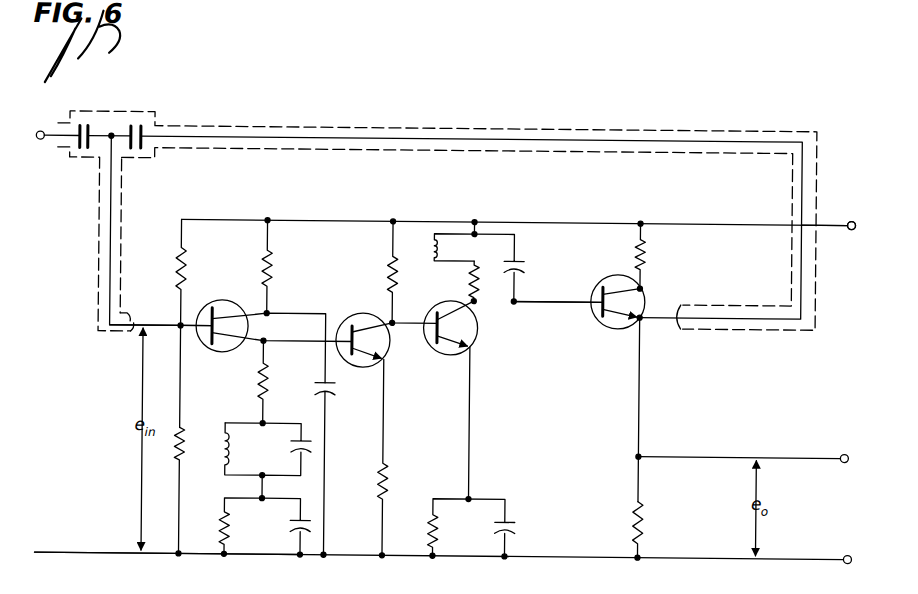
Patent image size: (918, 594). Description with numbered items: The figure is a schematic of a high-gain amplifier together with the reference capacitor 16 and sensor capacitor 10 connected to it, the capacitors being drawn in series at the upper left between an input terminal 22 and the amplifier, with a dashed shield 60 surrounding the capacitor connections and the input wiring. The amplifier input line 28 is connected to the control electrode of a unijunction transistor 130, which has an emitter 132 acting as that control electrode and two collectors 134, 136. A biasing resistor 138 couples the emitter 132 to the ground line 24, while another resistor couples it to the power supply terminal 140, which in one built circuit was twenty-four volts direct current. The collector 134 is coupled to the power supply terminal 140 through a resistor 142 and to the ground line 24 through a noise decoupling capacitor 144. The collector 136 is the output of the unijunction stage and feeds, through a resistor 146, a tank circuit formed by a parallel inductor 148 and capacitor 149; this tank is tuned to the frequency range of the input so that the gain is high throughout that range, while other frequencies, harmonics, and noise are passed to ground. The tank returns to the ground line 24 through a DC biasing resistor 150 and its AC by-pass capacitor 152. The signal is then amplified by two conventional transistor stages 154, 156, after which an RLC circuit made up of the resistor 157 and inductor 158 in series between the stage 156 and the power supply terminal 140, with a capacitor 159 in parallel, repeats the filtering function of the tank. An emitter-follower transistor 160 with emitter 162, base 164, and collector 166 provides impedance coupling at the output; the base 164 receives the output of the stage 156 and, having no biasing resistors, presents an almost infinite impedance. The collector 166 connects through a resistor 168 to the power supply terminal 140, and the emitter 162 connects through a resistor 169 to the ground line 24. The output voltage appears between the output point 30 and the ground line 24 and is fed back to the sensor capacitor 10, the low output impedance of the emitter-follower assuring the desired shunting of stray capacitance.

The sensor capacitor 10 is at (148, 131).
The reference capacitor 16 is at (100, 113).
The input terminal 22 is at (36, 143).
The ground line 24 is at (18, 582).
The operational amplifier input line 28 is at (152, 325).
The output point 30 is at (843, 460).
The shield 60 is at (133, 111).
The unijunction transistor 130 is at (184, 268).
The emitter 132 is at (206, 306).
The collector 134 is at (244, 317).
The collector 136 is at (240, 339).
The biasing resistor 138 is at (184, 430).
The power supply terminal 140 is at (832, 243).
The resistor 142 is at (272, 275).
The noise decoupling capacitor 144 is at (333, 393).
The resistor 146 is at (268, 386).
The inductor 148 is at (222, 462).
The capacitor 149 is at (293, 452).
The DC biasing resistor 150 is at (229, 529).
The AC by-pass capacitor 152 is at (294, 533).
The transistor stage 154 is at (368, 315).
The transistor stage 156 is at (434, 348).
The resistor 157 is at (468, 282).
The inductor 158 is at (432, 250).
The capacitor 159 is at (508, 263).
The emitter-follower transistor 160 is at (604, 283).
The emitter 162 is at (616, 321).
The base 164 is at (574, 302).
The collector 166 is at (636, 290).
The resistor 168 is at (646, 258).
The resistor 169 is at (634, 521).